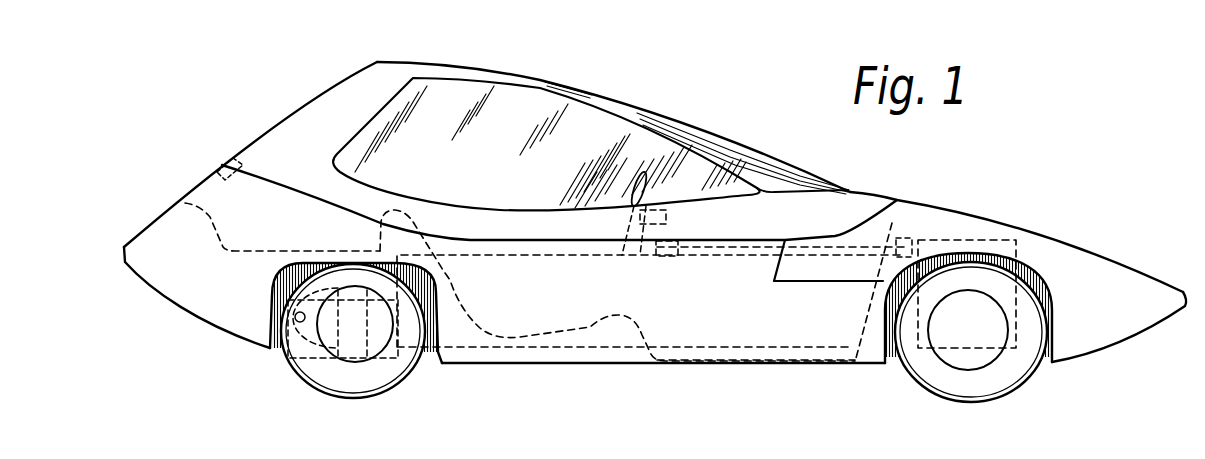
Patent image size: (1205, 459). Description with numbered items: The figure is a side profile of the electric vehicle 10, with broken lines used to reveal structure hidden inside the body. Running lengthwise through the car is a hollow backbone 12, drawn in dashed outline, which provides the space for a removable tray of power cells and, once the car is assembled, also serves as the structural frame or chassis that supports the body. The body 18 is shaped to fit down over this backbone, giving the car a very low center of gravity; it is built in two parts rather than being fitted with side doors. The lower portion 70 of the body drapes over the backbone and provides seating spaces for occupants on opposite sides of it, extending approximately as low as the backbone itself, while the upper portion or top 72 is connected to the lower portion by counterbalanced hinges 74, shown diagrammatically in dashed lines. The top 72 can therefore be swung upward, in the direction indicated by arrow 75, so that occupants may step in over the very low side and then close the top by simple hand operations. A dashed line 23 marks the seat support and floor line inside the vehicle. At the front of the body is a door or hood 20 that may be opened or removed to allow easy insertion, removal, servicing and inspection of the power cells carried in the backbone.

The vehicle 10 is at (577, 81).
The hollow backbone 12 is at (783, 333).
The body 18 is at (1088, 347).
The door or hood 20 is at (1079, 245).
The dashed line 23 is at (593, 327).
The lower portion of the body 70 is at (190, 287).
The upper portion or top of the body 72 is at (330, 93).
The counterbalanced hinges 74 is at (226, 165).
The arrow 75 is at (803, 125).